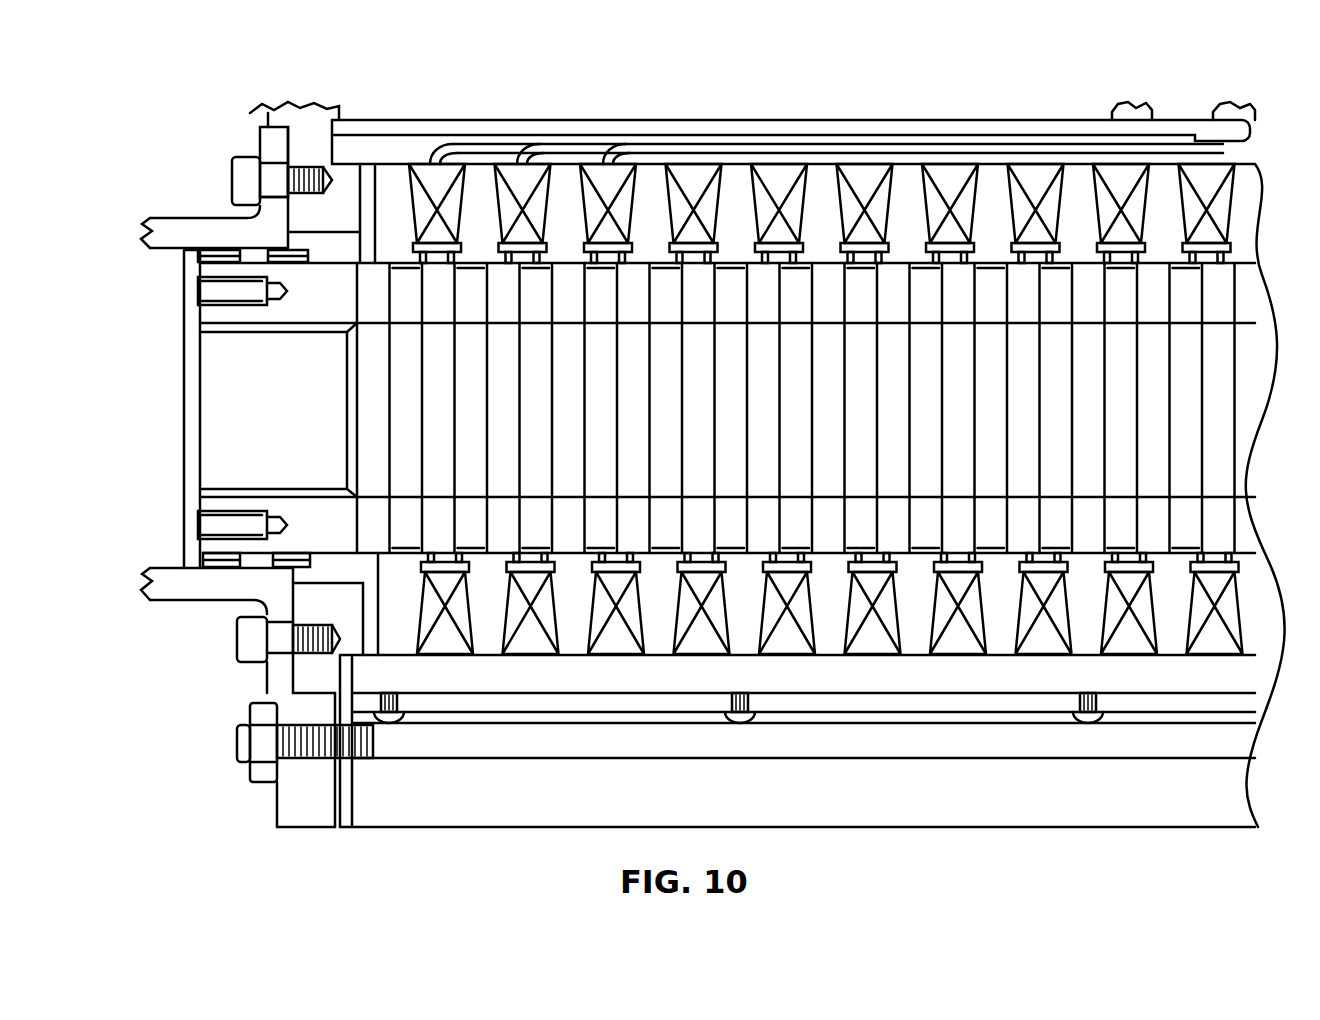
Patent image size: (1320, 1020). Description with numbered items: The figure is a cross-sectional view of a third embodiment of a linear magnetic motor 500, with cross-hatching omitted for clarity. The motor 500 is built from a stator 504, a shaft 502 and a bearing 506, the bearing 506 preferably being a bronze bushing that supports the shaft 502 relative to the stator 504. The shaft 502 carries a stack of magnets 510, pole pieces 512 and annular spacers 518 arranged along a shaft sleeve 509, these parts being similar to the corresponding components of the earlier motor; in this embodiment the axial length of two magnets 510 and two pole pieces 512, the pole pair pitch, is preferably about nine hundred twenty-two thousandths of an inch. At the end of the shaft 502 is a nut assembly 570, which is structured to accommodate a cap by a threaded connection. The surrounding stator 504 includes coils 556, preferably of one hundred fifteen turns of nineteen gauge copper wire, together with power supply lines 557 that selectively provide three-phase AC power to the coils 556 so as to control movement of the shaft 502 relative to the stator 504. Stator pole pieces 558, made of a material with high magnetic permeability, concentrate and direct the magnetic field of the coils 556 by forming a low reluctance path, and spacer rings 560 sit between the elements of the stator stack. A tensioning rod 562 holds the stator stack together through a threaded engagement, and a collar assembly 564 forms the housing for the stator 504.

The linear magnetic motor 500 is at (126, 143).
The shaft 502 is at (383, 262).
The stator 504 is at (612, 120).
The bearing 506 is at (192, 252).
The shaft sleeve 509 is at (385, 545).
The magnets 510 is at (665, 537).
The pole pieces 512 is at (830, 538).
The annular spacers 518 is at (403, 262).
The coils 556 is at (782, 182).
The power supply lines 557 is at (1250, 120).
The pole pieces 558 is at (993, 190).
The spacer rings 560 is at (1190, 625).
The tensioning rod 562 is at (940, 770).
The collar assembly 564 is at (275, 797).
The nut assembly 570 is at (183, 377).